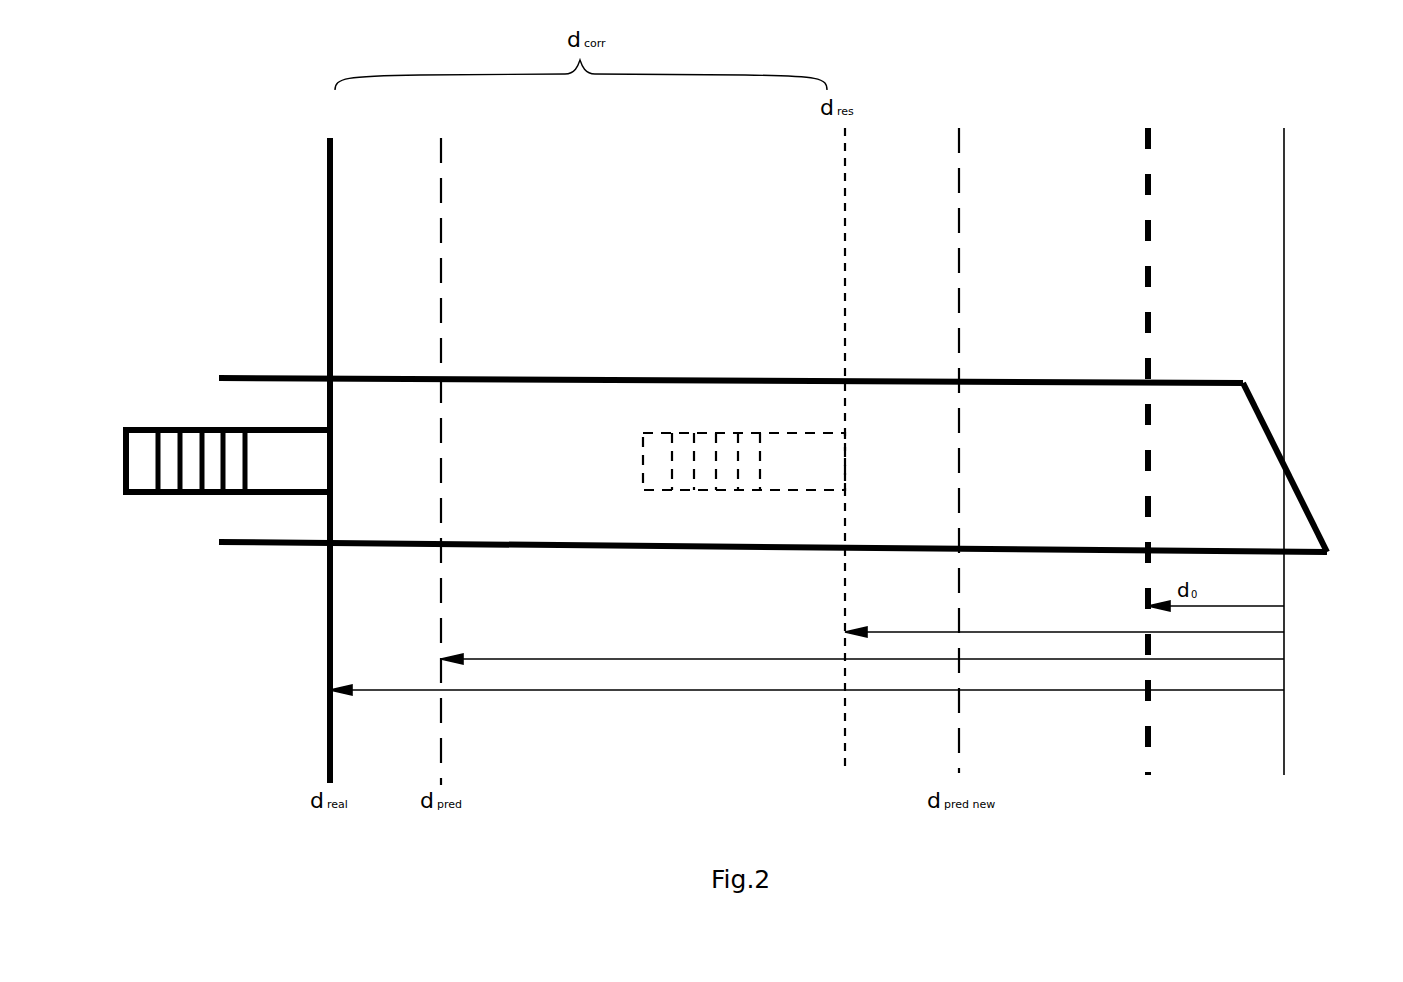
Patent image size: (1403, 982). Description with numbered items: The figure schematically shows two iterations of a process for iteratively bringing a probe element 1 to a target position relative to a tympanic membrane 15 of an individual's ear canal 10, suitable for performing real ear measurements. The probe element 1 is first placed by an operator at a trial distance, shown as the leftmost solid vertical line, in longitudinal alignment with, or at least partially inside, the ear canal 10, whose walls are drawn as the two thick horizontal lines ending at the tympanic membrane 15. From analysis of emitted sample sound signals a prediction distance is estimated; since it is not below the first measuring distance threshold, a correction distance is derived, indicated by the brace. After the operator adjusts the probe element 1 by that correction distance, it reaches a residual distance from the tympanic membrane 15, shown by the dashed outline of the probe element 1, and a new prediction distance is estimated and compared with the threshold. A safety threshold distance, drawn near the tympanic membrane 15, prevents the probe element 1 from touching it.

The probe element 1 is at (187, 462).
The ear canal 10 is at (503, 437).
The tympanic membrane 15 is at (1256, 400).